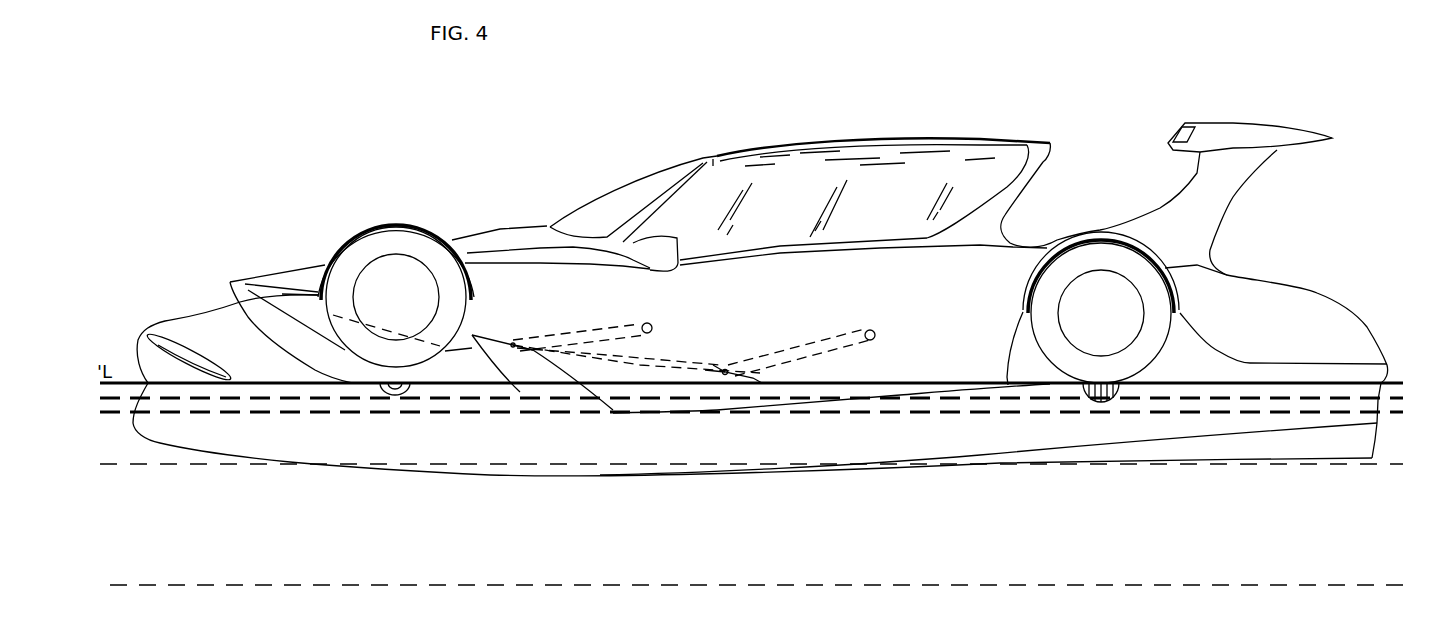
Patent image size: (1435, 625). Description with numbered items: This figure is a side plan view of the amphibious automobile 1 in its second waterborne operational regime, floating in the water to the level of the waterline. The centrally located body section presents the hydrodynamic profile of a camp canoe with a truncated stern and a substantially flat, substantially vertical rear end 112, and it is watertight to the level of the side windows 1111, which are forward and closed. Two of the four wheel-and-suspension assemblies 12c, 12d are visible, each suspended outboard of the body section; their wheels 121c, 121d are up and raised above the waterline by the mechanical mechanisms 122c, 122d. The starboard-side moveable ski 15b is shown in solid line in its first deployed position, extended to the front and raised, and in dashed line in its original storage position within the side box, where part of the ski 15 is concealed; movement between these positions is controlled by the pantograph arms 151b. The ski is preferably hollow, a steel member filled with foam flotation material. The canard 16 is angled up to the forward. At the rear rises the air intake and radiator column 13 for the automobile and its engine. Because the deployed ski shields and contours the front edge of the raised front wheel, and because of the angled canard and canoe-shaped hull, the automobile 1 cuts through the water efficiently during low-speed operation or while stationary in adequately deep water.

The amphibious automobile 1 is at (825, 47).
The wheel-and-suspension assembly 12c is at (365, 222).
The wheel-and-suspension assembly 12d is at (1078, 235).
The air intake and radiator column 13 is at (1233, 123).
The starboard-side ski 15 is at (272, 307).
The moveable ski 15b is at (558, 410).
The canard 16 is at (195, 350).
The rear end 112 is at (1390, 385).
The wheel 121c is at (363, 348).
The wheel 121d is at (1073, 365).
The mechanical mechanism 122c is at (396, 390).
The mechanical mechanism 122d is at (1103, 415).
The pantograph arms 151b is at (802, 343).
The side windows 1111 is at (906, 209).